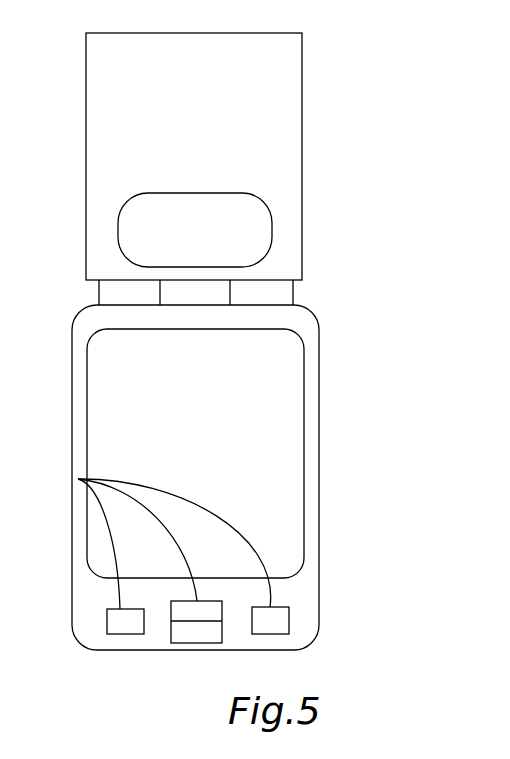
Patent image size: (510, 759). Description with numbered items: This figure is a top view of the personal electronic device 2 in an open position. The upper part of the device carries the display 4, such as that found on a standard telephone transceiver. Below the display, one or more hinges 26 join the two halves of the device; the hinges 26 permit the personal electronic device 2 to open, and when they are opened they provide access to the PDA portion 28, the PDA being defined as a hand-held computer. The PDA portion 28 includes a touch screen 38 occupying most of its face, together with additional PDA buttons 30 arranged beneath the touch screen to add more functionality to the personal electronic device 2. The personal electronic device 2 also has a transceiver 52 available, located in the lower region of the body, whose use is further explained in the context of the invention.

The personal electronic device 2 is at (213, 341).
The display 4 is at (187, 205).
The hinge 26 is at (97, 291).
The PDA portion 28 is at (206, 477).
The touch screen 38 is at (277, 408).
The PDA buttons 30 is at (78, 479).
The transceiver 52 is at (303, 590).